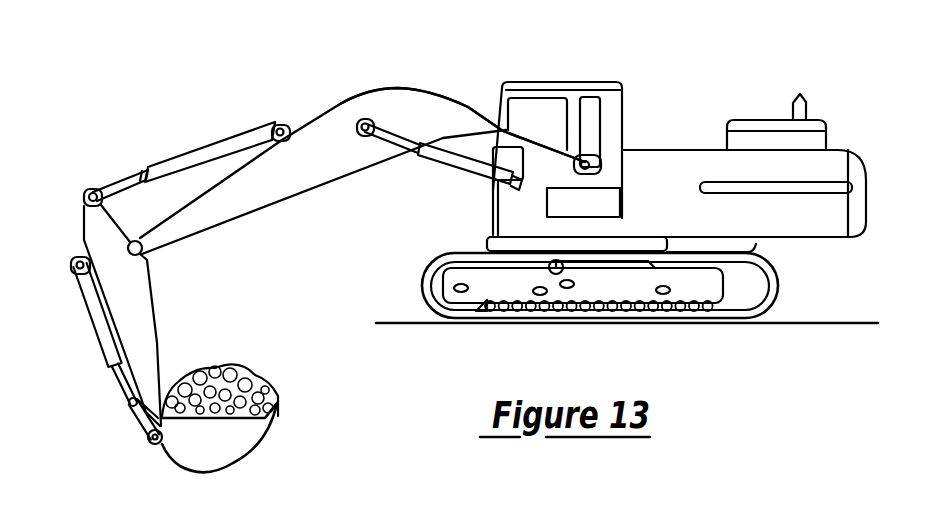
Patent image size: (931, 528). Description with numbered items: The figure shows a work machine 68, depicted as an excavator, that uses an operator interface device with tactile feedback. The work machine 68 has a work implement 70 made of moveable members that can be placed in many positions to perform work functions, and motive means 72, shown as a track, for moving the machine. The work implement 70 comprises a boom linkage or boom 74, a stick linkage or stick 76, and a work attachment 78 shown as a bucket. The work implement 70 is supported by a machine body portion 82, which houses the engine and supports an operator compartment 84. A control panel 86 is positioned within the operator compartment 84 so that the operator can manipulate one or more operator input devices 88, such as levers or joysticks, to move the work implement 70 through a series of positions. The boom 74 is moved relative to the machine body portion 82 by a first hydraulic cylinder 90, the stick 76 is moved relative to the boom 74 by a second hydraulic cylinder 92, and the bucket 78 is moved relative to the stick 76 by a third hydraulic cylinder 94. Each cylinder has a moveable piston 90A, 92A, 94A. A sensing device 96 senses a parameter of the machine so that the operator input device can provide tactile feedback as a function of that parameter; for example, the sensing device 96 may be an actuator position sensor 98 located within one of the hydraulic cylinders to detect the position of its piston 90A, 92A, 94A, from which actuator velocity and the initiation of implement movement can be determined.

The work machine 68 is at (433, 70).
The work implement 70 is at (273, 110).
The motive means 72 is at (704, 330).
The boom linkage 74 is at (388, 91).
The stick linkage 76 is at (82, 206).
The work attachment 78 is at (174, 462).
The machine body portion 82 is at (672, 150).
The operator compartment 84 is at (556, 82).
The control panel 86 is at (496, 194).
The operator input devices 88 is at (500, 122).
The first hydraulic cylinder 90 is at (448, 172).
The piston 90A is at (364, 133).
The second hydraulic cylinder 92 is at (212, 140).
The piston 92A is at (125, 180).
The third hydraulic cylinder 94 is at (85, 313).
The piston 94A is at (113, 378).
The sensing device 96 is at (402, 186).
The actuator position sensor 98 is at (431, 154).